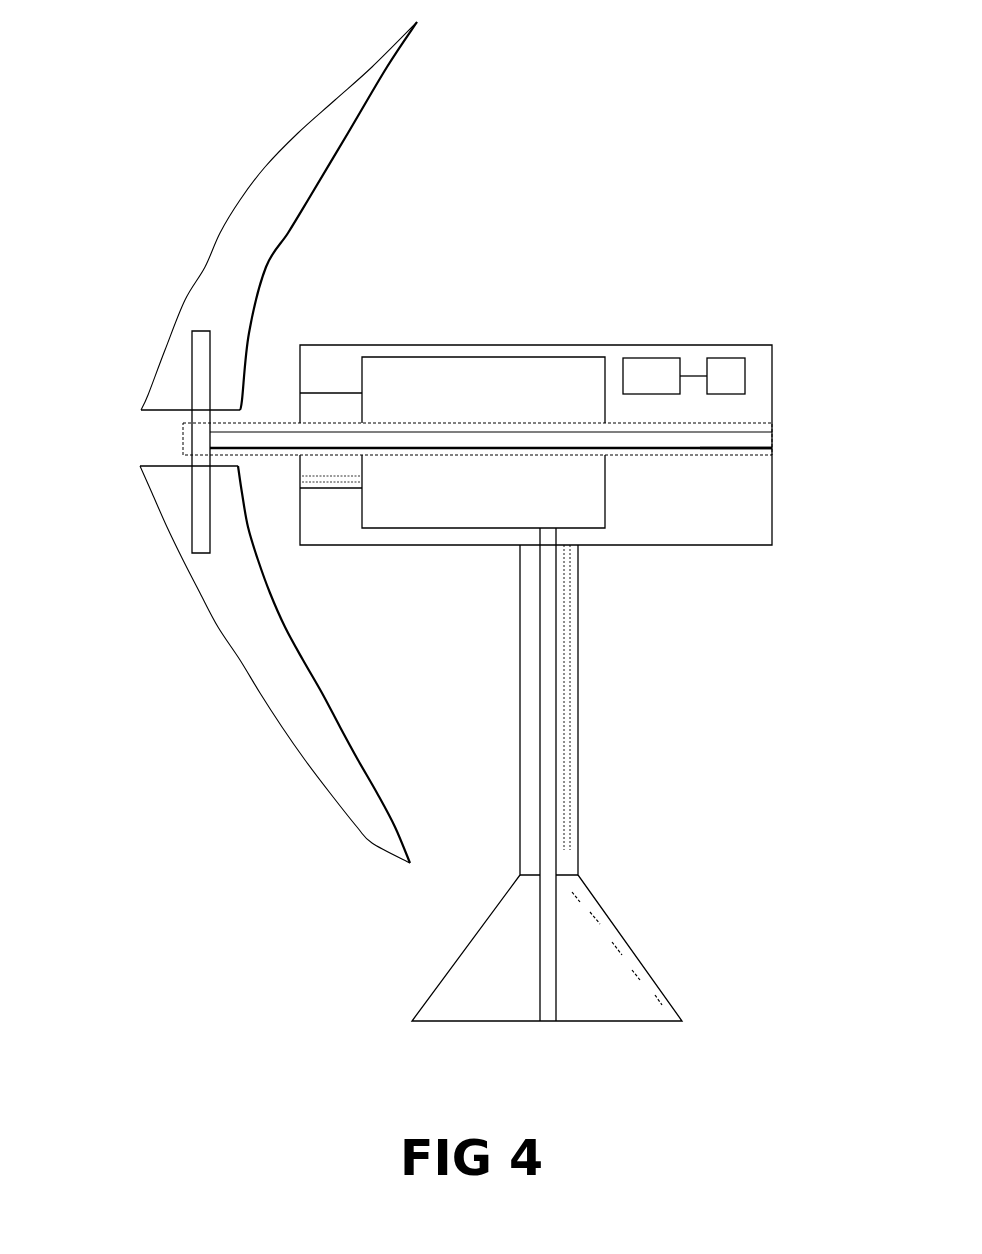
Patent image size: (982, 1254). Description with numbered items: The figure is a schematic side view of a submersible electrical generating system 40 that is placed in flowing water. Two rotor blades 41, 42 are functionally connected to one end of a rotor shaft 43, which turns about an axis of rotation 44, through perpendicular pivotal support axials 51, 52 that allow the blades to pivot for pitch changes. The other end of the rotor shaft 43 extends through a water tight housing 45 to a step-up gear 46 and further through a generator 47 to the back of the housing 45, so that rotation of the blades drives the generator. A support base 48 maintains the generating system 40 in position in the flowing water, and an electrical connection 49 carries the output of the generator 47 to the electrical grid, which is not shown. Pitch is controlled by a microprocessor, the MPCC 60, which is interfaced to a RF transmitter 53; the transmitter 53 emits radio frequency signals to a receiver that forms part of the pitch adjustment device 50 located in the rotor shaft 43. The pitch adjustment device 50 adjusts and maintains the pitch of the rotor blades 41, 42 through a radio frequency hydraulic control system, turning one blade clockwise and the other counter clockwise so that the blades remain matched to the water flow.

The submersible generating system 40 is at (548, 197).
The rotor blade 41 is at (227, 274).
The rotor blade 42 is at (235, 629).
The rotor shaft 43 is at (278, 456).
The axis of rotation 44 is at (183, 436).
The water tight housing 45 is at (727, 345).
The step-up gear 46 is at (336, 412).
The generator 47 is at (577, 387).
The support base 48 is at (534, 617).
The electrical connection 49 is at (546, 735).
The pitch adjustment device 50 is at (787, 445).
The pivotal support axial 51 is at (198, 385).
The pivotal support axial 52 is at (198, 523).
The RF transmitter 53 is at (745, 376).
The MPCC 60 is at (657, 357).